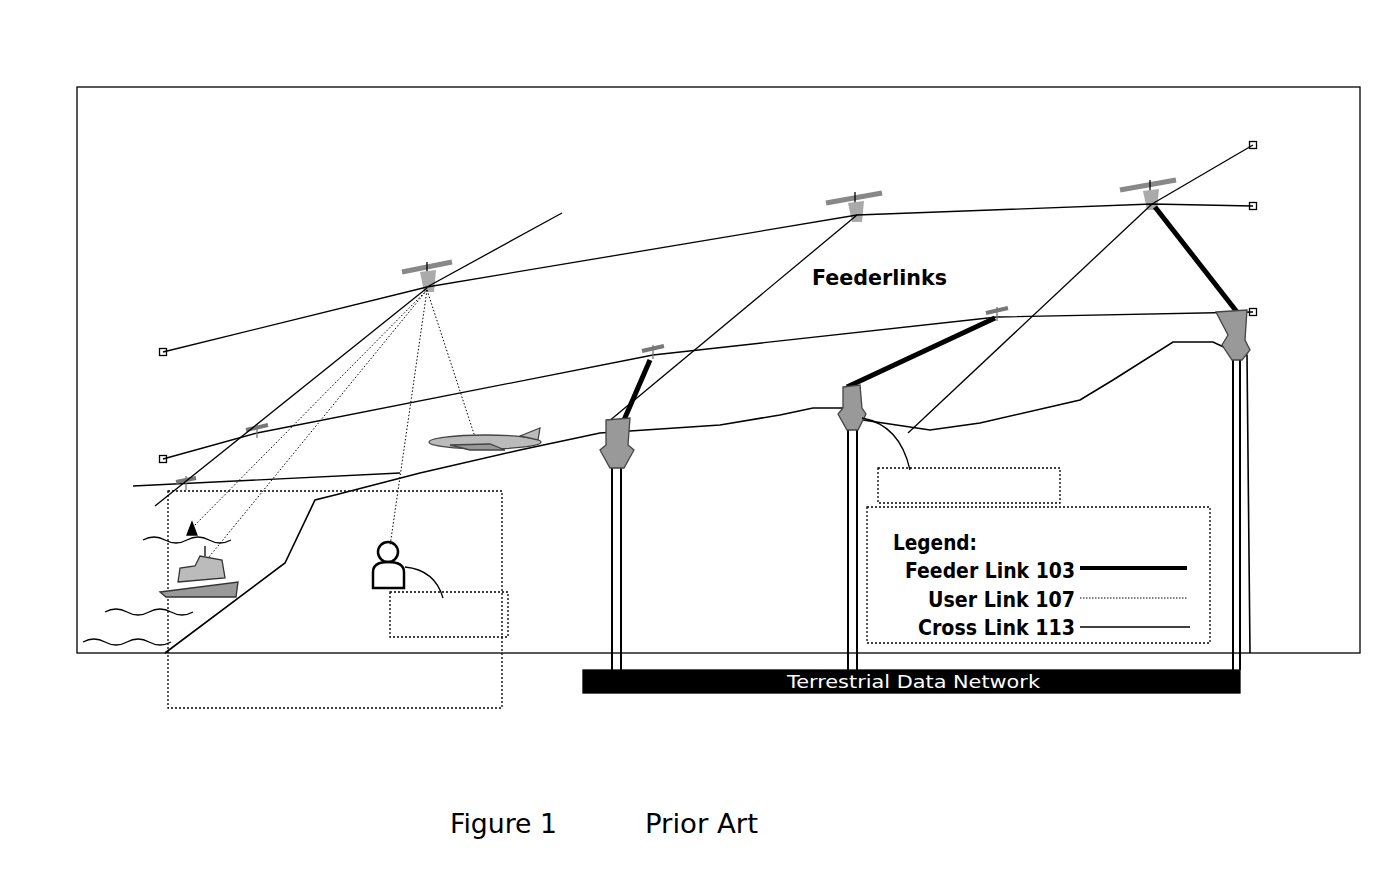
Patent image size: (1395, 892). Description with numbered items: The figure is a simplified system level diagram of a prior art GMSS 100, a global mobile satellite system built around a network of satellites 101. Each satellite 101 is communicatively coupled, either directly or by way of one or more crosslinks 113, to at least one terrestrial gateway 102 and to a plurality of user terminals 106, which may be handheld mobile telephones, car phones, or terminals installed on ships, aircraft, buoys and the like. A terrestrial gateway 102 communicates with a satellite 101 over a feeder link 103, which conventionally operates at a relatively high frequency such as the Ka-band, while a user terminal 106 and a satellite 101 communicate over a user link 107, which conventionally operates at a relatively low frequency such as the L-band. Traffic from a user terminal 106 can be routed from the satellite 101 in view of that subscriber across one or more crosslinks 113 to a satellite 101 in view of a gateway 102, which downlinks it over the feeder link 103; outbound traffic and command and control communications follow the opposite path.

The GMSS 100 is at (441, 80).
The satellite 101 is at (423, 267).
The terrestrial gateway 102 is at (1243, 327).
The feeder link 103 is at (633, 408).
The user terminal 106 is at (477, 433).
The user link 107 is at (455, 345).
The crosslink 113 is at (712, 243).